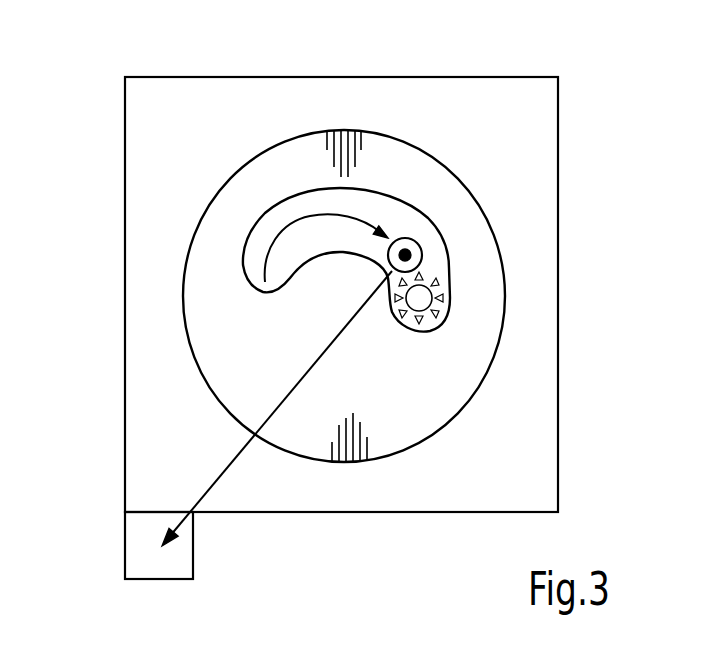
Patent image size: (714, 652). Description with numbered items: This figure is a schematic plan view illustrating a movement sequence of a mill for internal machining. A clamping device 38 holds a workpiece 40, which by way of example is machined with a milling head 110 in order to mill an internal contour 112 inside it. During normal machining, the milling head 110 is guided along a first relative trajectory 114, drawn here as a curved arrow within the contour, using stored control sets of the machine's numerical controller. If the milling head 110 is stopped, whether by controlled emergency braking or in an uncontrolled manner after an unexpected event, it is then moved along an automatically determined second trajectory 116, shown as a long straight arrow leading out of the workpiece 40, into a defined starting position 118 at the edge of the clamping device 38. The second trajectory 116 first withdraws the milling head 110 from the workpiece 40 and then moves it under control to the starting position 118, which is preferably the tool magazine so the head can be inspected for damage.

The clamping device 38 is at (507, 95).
The workpiece 40 is at (447, 396).
The milling head 110 is at (410, 300).
The internal contour 112 is at (418, 217).
The first trajectory 114 is at (275, 250).
The second trajectory 116 is at (280, 400).
The starting position 118 is at (180, 562).